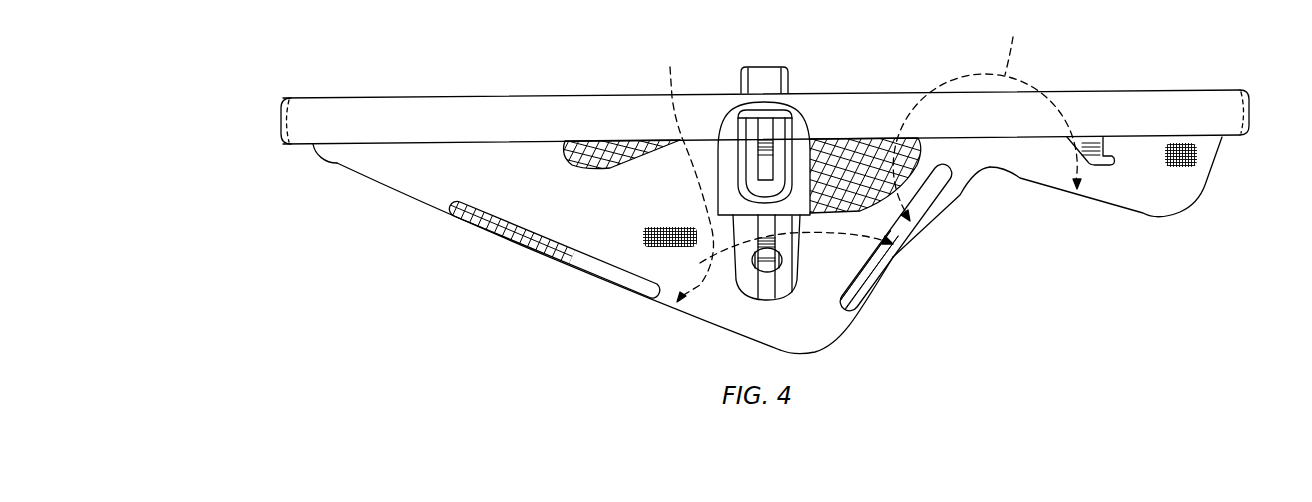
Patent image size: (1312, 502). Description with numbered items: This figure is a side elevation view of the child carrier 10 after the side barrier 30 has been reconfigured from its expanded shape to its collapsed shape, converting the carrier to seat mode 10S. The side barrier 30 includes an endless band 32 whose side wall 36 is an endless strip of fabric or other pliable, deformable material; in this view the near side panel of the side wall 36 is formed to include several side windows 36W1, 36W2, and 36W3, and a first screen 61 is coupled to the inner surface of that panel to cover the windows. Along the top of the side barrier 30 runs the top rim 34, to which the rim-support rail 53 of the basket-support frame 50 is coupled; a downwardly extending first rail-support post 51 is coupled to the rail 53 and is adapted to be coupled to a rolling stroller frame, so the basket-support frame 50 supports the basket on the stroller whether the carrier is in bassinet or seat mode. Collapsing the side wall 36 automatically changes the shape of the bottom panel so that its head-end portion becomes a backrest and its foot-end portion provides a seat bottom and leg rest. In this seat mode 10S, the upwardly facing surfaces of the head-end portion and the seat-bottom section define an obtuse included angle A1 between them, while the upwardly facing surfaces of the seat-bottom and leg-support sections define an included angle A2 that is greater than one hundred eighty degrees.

The child carrier 10 is at (1199, 77).
The seat mode 10S is at (372, 77).
The rim-support rail 53 is at (540, 115).
The top rim 34 is at (300, 121).
The endless band 32 is at (230, 170).
The side wall 36 is at (440, 172).
The side window 36W1 is at (592, 250).
The side window 36W2 is at (857, 200).
The side window 36W3 is at (928, 218).
The side barrier 30 is at (1180, 183).
The first screen 61 is at (510, 234).
The basket-support frame 50 is at (722, 268).
The first rail-support post 51 is at (815, 260).
The obtuse included angle A1 is at (775, 172).
The included angle A2 is at (987, 115).